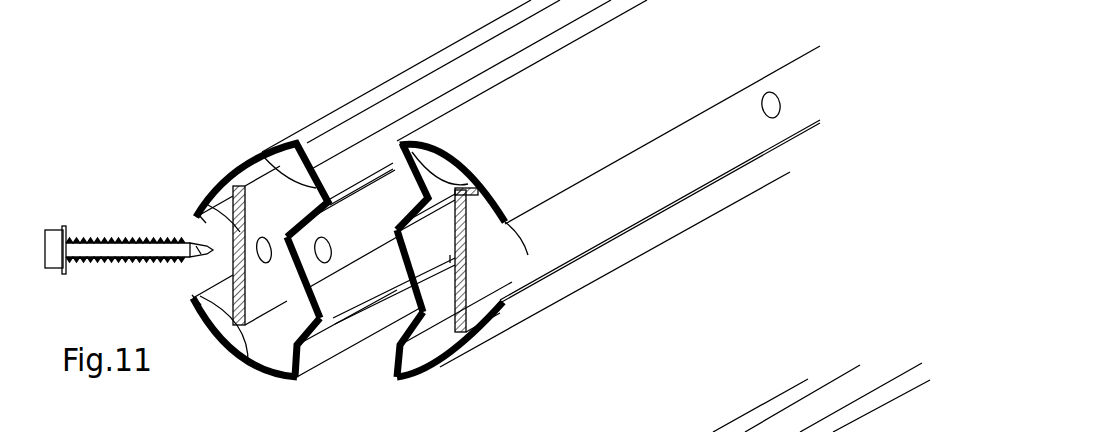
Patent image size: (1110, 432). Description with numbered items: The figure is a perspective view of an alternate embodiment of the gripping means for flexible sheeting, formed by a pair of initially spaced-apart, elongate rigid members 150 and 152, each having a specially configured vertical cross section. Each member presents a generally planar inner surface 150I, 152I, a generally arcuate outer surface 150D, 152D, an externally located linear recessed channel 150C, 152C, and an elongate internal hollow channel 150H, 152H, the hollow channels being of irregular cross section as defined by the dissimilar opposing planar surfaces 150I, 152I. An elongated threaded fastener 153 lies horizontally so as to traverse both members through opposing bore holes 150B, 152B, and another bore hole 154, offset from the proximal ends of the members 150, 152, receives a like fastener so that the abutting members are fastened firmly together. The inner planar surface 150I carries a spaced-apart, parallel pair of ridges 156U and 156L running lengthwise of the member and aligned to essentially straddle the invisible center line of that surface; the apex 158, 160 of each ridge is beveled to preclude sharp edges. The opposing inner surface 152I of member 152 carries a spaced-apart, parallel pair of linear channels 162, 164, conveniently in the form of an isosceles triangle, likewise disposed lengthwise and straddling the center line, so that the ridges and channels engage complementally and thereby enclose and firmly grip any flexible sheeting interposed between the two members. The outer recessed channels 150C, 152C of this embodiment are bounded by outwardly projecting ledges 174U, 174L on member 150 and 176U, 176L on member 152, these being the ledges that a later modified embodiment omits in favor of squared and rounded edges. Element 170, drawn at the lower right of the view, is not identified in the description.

The elongate rigid member 150 is at (410, 60).
The bore hole 150B is at (291, 210).
The linear recessed channel 150C is at (220, 235).
The arcuate outer surface 150D is at (332, 108).
The internal hollow channel 150H is at (278, 268).
The inner planar surface 150I is at (300, 208).
The elongate rigid member 152 is at (690, 229).
The bore hole 152B is at (348, 245).
The linear recessed channel 152C is at (528, 189).
The arcuate outer surface 152D is at (607, 118).
The internal hollow channel 152H is at (450, 259).
The inner planar surface 152I is at (388, 226).
The elongated threaded fastener 153 is at (147, 238).
The bore hole 154 is at (766, 117).
The upper ridge 156U is at (270, 141).
The lower ridge 156L is at (282, 362).
The ridge apex 158 is at (328, 195).
The ridge apex 160 is at (343, 321).
The linear channel 162 is at (447, 160).
The linear channel 164 is at (426, 362).
The adjacent member 170 is at (655, 431).
The outwardly projecting ledge 174U is at (203, 198).
The outwardly projecting ledge 174L is at (195, 294).
The outwardly projecting ledge 176U is at (508, 214).
The outwardly projecting ledge 176L is at (500, 306).